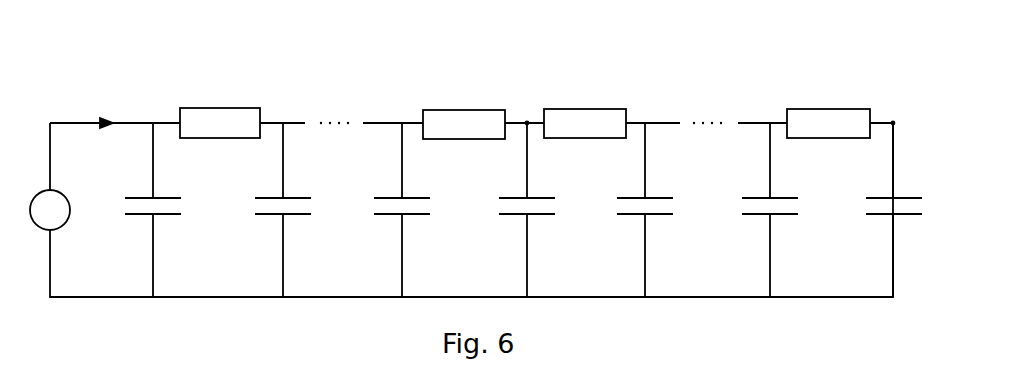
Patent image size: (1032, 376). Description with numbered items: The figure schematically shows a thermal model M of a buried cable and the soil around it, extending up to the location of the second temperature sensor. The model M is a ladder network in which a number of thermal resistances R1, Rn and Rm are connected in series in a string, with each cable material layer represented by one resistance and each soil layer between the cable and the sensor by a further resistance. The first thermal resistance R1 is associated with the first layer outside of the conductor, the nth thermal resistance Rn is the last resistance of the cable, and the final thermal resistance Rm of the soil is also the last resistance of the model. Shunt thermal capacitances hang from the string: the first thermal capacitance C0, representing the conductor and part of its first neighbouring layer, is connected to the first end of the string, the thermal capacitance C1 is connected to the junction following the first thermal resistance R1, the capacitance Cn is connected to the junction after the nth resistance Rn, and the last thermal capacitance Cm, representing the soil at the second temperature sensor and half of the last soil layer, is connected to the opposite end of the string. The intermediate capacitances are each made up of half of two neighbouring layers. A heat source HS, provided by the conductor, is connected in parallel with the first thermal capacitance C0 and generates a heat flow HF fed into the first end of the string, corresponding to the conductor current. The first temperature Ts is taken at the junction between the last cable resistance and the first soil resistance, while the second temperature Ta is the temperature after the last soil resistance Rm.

The thermal model M is at (180, 86).
The heat flow HF is at (91, 110).
The heat source HS is at (42, 196).
The first thermal capacitance C0 is at (136, 210).
The thermal capacitance C1 is at (264, 210).
The thermal capacitance Cn is at (508, 210).
The last thermal capacitance Cm is at (874, 210).
The first thermal resistance R1 is at (220, 107).
The nth thermal resistance Rn is at (464, 107).
The final thermal resistance of the soil Rm is at (828, 107).
The first temperature Ts is at (527, 123).
The second temperature Ta is at (893, 123).